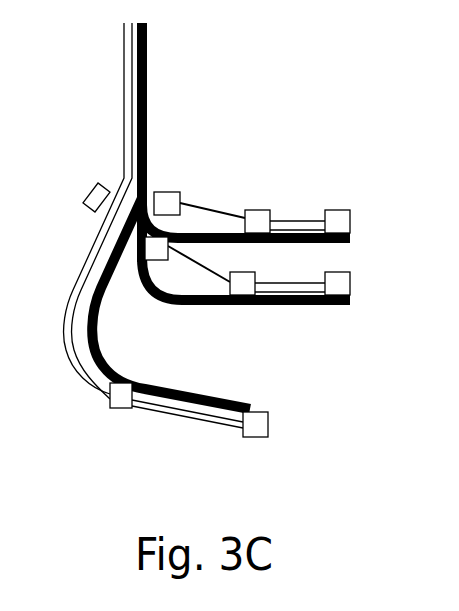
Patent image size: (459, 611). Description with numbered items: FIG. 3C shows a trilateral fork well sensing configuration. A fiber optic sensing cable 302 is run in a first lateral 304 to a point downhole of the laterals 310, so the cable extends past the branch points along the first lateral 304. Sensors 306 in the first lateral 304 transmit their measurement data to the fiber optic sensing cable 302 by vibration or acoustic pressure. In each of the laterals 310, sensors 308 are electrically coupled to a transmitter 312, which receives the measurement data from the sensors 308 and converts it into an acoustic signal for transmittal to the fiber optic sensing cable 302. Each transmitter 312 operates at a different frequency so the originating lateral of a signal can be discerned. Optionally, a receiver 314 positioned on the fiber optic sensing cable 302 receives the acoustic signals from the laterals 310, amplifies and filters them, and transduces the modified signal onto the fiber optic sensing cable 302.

The fiber optic sensing cable 302 is at (122, 70).
The first lateral 304 is at (235, 403).
The sensors 306 is at (120, 408).
The sensors 308 is at (256, 217).
The laterals 310 is at (312, 243).
The transmitter 312 is at (163, 192).
The receiver 314 is at (90, 193).